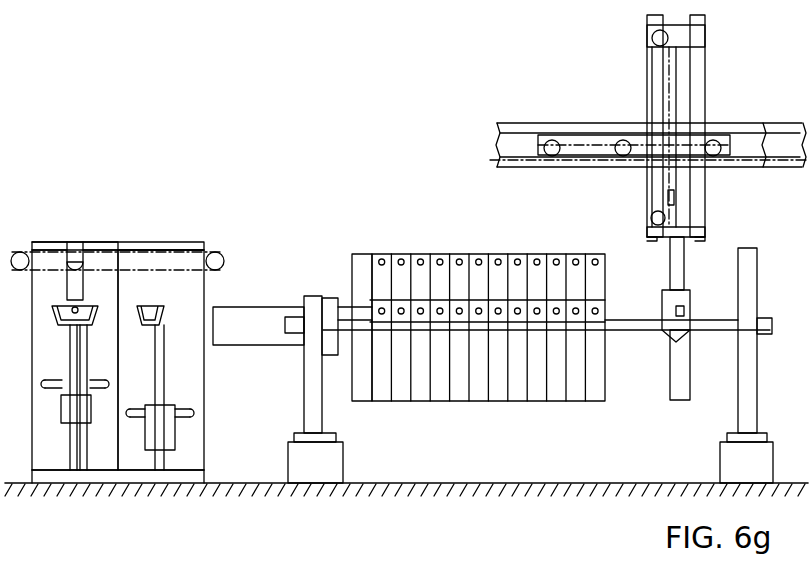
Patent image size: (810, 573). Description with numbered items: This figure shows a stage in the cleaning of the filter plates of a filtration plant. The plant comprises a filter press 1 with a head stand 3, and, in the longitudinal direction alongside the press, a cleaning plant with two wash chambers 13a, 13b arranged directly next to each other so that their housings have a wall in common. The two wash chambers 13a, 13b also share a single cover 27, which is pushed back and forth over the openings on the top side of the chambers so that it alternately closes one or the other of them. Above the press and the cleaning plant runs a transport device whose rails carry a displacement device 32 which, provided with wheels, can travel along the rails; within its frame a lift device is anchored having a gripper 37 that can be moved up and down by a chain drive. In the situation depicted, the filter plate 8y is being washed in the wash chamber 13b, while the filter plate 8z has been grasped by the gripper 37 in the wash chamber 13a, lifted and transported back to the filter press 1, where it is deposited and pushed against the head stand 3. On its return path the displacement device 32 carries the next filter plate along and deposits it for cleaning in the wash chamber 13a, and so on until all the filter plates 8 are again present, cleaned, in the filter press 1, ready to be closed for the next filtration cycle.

The filter press 1 is at (501, 458).
The head stand 3 is at (750, 367).
The filter plates 8 is at (380, 254).
The filter plate 8y is at (72, 288).
The filter plate 8z is at (680, 400).
The wash chamber 13a is at (180, 462).
The wash chamber 13b is at (96, 462).
The cover 27 is at (96, 244).
The displacement device 32 is at (706, 81).
The gripper 37 is at (670, 262).